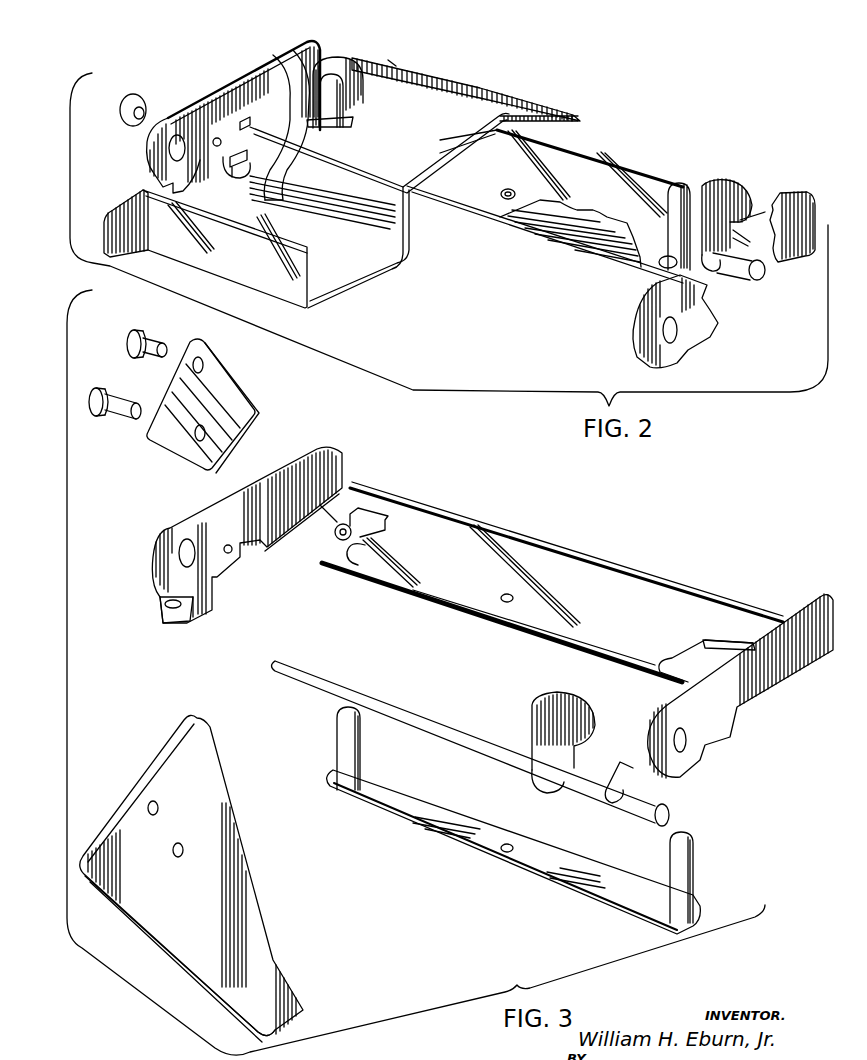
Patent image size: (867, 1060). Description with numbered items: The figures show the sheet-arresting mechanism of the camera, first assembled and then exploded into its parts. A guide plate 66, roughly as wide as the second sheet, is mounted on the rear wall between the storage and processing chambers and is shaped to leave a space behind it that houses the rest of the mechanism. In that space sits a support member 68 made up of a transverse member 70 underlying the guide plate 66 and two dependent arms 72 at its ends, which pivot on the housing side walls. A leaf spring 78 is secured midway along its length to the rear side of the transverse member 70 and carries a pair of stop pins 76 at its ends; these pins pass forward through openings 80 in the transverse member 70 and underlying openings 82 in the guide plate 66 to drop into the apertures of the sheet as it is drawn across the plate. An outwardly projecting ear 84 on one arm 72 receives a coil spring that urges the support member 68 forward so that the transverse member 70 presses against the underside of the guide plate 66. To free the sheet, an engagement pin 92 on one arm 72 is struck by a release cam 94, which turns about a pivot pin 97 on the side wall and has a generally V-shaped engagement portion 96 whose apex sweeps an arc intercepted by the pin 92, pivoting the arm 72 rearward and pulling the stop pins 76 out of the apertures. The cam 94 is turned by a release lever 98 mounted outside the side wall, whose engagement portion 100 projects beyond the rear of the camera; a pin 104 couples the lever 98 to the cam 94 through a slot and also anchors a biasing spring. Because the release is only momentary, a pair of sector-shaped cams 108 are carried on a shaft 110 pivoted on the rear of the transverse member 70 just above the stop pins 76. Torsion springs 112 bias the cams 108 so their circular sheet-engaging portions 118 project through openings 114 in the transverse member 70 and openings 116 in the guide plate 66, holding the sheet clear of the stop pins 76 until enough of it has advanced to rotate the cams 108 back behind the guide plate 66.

In FIG. 2, the guide plate 66 is at (421, 134).
In FIG. 2, the support member 68 is at (627, 157).
In FIG. 3, the support member 68 is at (608, 563).
In FIG. 2, the transverse member 70 is at (570, 160).
In FIG. 3, the transverse member 70 is at (533, 547).
In FIG. 2, the dependent arms 72 is at (197, 102).
In FIG. 3, the dependent arms 72 is at (220, 566).
In FIG. 2, the stop pins 76 is at (347, 63).
In FIG. 3, the stop pins 76 is at (360, 744).
In FIG. 2, the leaf spring 78 is at (573, 230).
In FIG. 3, the leaf spring 78 is at (460, 837).
In FIG. 3, the openings 80 is at (353, 561).
In FIG. 2, the openings 82 is at (323, 130).
In FIG. 3, the ear 84 is at (160, 615).
In FIG. 2, the engagement pin 92 is at (138, 101).
In FIG. 3, the release cam 94 is at (243, 433).
In FIG. 3, the engagement portion 96 is at (220, 463).
In FIG. 3, the pivot pin 97 is at (160, 343).
In FIG. 3, the release lever 98 is at (203, 790).
In FIG. 3, the engagement portion 100 is at (253, 1027).
In FIG. 3, the pin 104 is at (137, 412).
In FIG. 2, the sector-shaped cams 108 is at (343, 53).
In FIG. 3, the sector-shaped cams 108 is at (548, 695).
In FIG. 2, the shaft 110 is at (393, 63).
In FIG. 3, the shaft 110 is at (640, 797).
In FIG. 3, the torsion springs 112 is at (607, 812).
In FIG. 2, the openings 114 is at (785, 214).
In FIG. 3, the openings 114 is at (368, 515).
In FIG. 2, the openings 116 is at (280, 58).
In FIG. 2, the sheet-engaging portion 118 is at (727, 180).
In FIG. 3, the sheet-engaging portion 118 is at (577, 700).